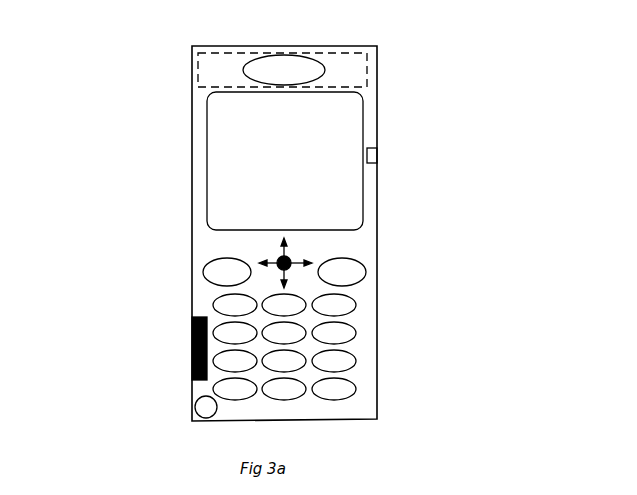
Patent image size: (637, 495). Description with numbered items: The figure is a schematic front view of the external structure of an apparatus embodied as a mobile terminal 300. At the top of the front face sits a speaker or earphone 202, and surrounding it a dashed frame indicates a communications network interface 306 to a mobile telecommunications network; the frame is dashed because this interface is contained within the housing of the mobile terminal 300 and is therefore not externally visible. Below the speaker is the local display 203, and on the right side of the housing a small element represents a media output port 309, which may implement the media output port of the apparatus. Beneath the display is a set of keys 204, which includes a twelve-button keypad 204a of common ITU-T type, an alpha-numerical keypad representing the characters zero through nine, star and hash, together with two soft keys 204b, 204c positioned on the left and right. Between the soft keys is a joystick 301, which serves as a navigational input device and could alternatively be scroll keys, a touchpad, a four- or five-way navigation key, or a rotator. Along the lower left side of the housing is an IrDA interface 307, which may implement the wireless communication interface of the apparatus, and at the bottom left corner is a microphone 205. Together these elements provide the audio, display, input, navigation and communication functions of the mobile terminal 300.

The mobile terminal 300 is at (172, 72).
The speaker or earphone 202 is at (276, 63).
The communications network interface 306 is at (340, 60).
The local display 203 is at (218, 150).
The media output port 309 is at (378, 153).
The joystick 301 is at (278, 258).
The soft key 204b is at (215, 272).
The soft key 204c is at (348, 272).
The set of keys 204 is at (285, 347).
The 12-button keypad 204a is at (346, 331).
The IrDA interface 307 is at (192, 348).
The microphone 205 is at (200, 408).